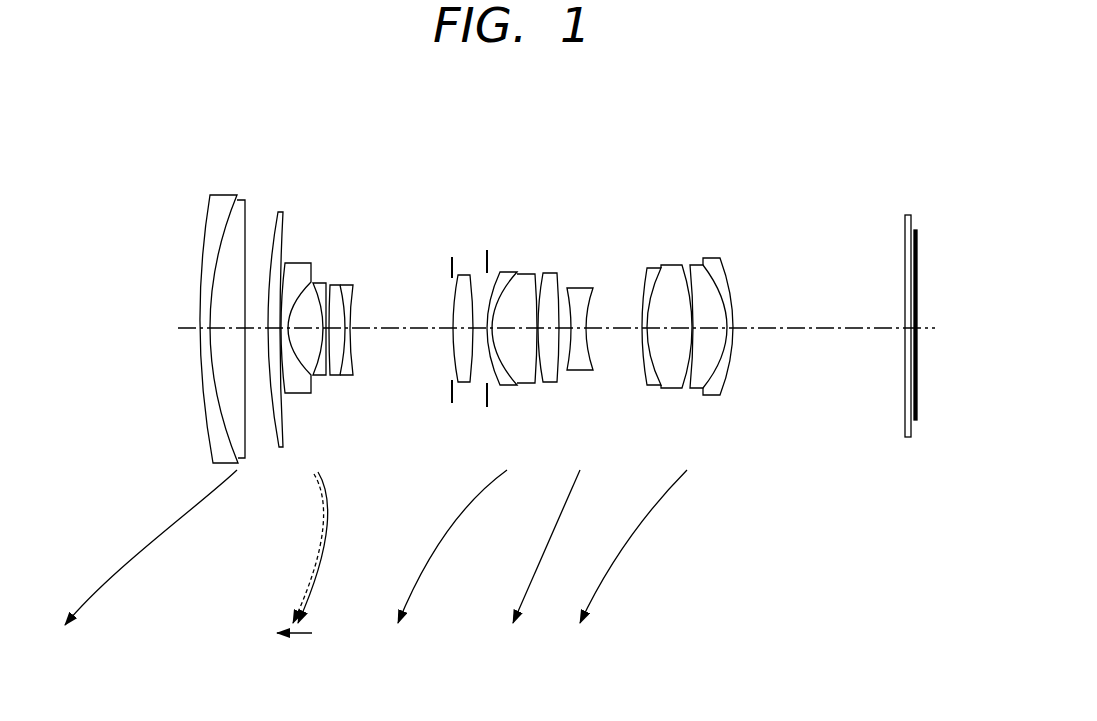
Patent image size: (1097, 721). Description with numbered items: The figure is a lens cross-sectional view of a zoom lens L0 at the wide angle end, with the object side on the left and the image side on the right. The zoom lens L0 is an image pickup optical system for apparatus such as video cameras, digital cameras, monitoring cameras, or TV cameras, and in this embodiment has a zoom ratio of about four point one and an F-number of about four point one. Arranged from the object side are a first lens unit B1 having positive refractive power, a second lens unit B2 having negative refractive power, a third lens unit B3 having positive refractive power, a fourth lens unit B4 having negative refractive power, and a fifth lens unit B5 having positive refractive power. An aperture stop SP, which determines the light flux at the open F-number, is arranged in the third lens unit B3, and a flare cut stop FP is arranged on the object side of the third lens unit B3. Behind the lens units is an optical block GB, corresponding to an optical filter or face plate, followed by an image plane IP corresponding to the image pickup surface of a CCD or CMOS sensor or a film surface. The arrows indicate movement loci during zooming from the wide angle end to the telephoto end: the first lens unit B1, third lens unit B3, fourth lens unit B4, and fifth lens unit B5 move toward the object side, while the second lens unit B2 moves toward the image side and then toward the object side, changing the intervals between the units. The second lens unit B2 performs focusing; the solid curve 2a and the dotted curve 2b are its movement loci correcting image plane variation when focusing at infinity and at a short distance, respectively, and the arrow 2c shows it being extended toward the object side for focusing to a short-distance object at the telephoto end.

The zoom lens L0 is at (735, 125).
The first lens unit B1 is at (273, 186).
The second lens unit B2 is at (358, 186).
The third lens unit B3 is at (448, 186).
The fourth lens unit B4 is at (595, 186).
The fifth lens unit B5 is at (633, 186).
The flare cut stop FP is at (452, 392).
The aperture stop SP is at (487, 395).
The optical block GB is at (902, 182).
The image plane IP is at (915, 265).
The solid curve 2a is at (312, 593).
The dotted curve 2b is at (313, 569).
The arrow 2c is at (303, 637).